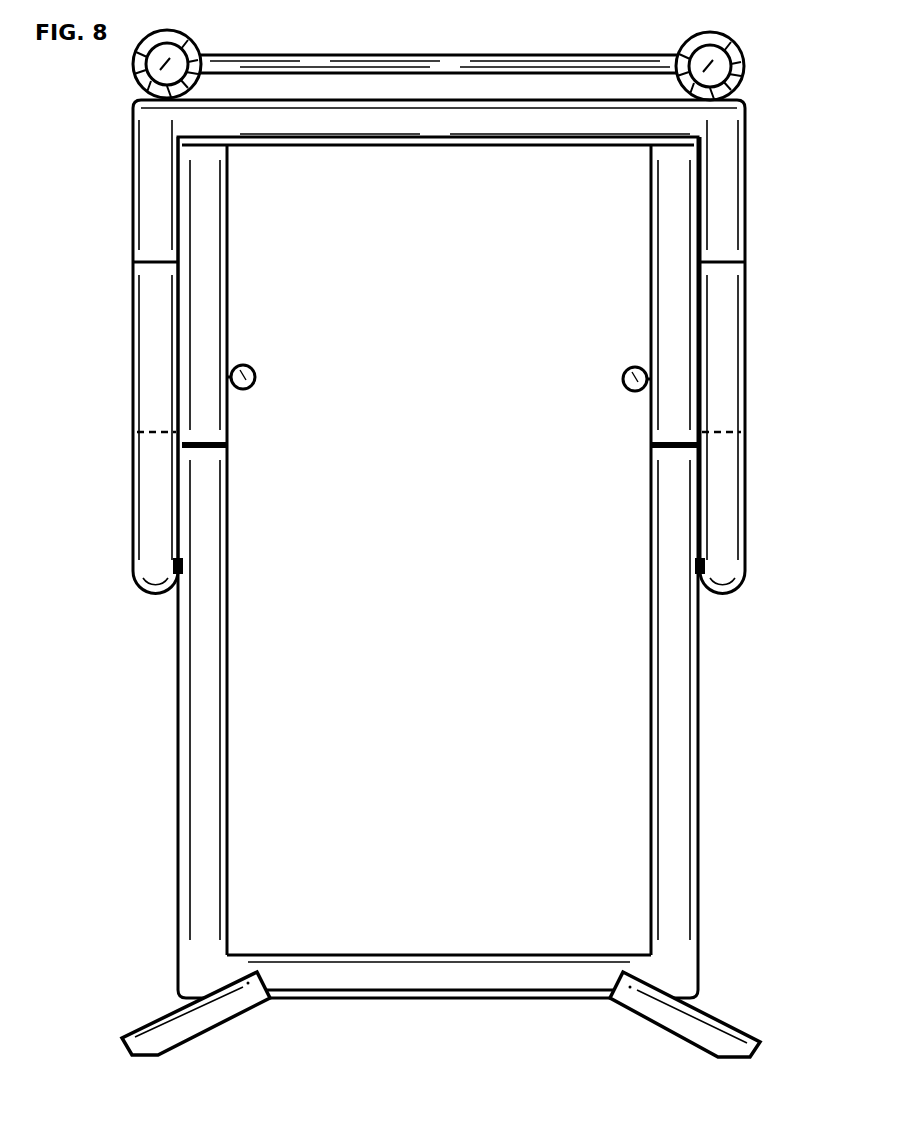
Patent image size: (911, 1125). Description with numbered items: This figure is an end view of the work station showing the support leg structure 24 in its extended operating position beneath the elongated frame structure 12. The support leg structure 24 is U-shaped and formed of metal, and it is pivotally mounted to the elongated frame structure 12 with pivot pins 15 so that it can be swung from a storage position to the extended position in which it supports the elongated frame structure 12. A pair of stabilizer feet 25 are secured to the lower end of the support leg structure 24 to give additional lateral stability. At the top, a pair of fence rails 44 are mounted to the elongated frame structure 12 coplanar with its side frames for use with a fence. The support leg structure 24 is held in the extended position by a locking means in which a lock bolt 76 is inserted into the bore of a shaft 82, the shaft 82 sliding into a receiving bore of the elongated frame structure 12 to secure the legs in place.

The elongated frame structure 12 is at (157, 483).
The pivot pins 15 is at (177, 567).
The support leg structure 24 is at (203, 790).
The stabilizer feet 25 is at (180, 1022).
The fence rails 44 is at (152, 72).
The lock bolt 76 is at (250, 364).
The shaft 82 is at (227, 448).